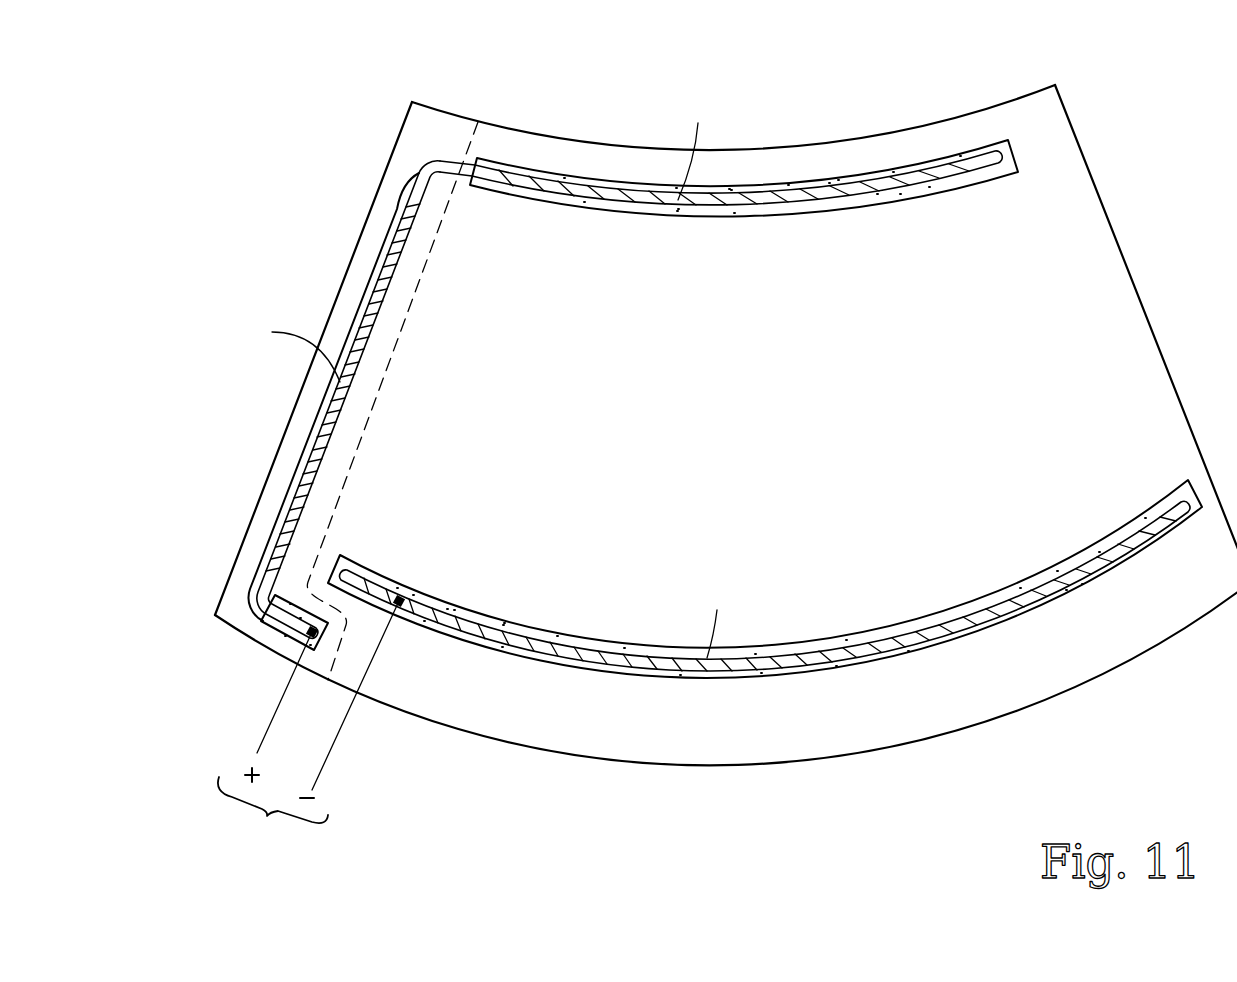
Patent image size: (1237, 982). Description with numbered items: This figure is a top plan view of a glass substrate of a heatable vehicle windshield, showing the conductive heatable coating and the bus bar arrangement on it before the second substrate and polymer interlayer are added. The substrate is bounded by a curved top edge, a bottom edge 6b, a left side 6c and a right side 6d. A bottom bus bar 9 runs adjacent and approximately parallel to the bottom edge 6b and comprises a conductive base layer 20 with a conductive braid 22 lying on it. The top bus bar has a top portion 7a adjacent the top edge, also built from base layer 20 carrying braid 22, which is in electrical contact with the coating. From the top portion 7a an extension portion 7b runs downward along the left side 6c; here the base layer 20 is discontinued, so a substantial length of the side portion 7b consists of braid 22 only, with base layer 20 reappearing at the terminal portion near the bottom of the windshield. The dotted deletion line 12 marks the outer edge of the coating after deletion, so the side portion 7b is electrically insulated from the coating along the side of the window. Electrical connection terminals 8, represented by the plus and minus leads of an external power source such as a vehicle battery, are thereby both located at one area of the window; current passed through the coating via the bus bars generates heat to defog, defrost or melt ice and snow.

The bottom edge 6b is at (890, 748).
The left side 6c is at (287, 425).
The right side 6d is at (1116, 232).
The top portion of bus bar 7a is at (787, 170).
The extension portion of bus bar 7b is at (367, 288).
The electrical connection terminals 8 is at (264, 825).
The bottom bus bar 9 is at (852, 632).
The deletion line 12 is at (393, 348).
The conductive base layer 20 is at (934, 163).
The conductive braid 22 is at (843, 190).